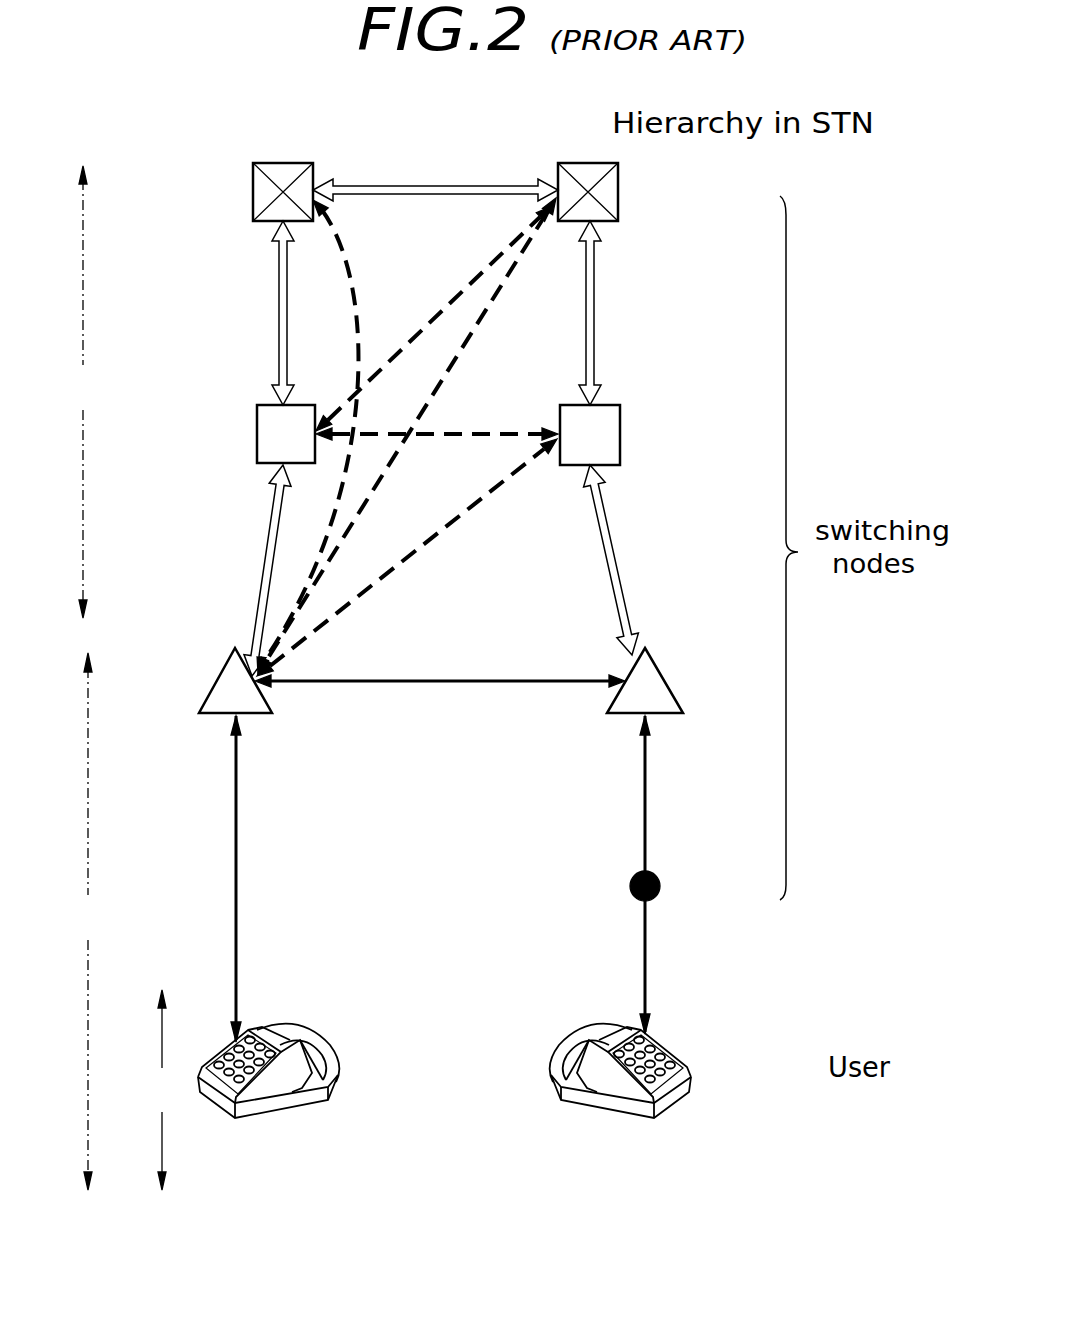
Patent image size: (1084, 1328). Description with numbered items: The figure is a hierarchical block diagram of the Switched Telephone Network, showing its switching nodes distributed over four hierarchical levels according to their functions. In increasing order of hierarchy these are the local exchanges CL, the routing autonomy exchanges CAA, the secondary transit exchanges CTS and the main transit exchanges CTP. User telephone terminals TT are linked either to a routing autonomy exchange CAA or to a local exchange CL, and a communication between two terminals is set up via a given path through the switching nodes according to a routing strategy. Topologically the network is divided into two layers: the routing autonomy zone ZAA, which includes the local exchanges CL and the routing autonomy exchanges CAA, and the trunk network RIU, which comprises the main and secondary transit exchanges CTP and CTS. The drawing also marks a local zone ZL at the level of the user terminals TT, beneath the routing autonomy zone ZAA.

The main transit exchange CTP is at (618, 190).
The secondary transit exchange CTS is at (620, 433).
The routing autonomy exchange CAA is at (660, 682).
The local exchange CL is at (660, 886).
The user telephone terminal TT is at (325, 1063).
The trunk network RIU is at (90, 392).
The routing autonomy zone ZAA is at (92, 921).
The local zone (subscriber line) ZL is at (164, 1090).